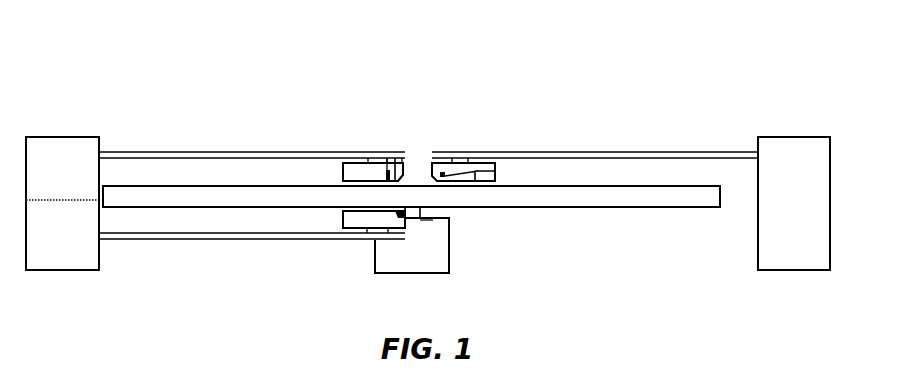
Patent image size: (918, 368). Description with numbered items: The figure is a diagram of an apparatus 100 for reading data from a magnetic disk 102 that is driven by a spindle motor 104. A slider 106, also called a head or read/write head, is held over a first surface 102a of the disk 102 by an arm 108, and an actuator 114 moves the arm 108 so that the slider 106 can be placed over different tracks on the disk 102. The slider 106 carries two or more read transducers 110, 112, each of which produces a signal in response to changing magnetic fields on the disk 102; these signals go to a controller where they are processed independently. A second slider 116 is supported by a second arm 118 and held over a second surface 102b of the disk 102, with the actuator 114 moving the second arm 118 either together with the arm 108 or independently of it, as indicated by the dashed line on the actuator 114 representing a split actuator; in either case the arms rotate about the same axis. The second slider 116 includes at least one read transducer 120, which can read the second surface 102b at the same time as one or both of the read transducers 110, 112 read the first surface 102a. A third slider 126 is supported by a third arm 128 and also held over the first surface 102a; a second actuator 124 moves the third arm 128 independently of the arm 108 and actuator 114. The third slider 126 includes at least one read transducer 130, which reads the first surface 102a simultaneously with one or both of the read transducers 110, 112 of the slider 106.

The apparatus 100 is at (552, 60).
The magnetic disk 102 is at (680, 197).
The first surface 102a is at (578, 186).
The second surface 102b is at (604, 208).
The spindle motor 104 is at (390, 273).
The slider 106 is at (355, 170).
The arm 108 is at (230, 152).
The read transducer 110 is at (401, 163).
The read transducer 112 is at (388, 170).
The actuator 114 is at (52, 138).
The second slider 116 is at (353, 222).
The second arm 118 is at (217, 240).
The read transducer 120 is at (426, 213).
The second actuator 124 is at (785, 137).
The third slider 126 is at (463, 167).
The third arm 128 is at (605, 152).
The read transducer 130 is at (495, 172).